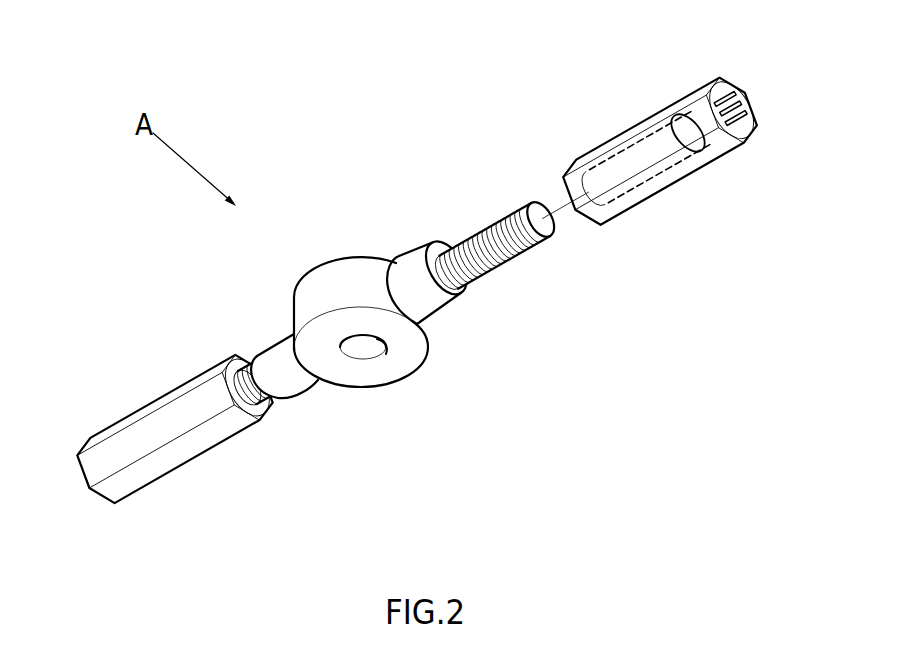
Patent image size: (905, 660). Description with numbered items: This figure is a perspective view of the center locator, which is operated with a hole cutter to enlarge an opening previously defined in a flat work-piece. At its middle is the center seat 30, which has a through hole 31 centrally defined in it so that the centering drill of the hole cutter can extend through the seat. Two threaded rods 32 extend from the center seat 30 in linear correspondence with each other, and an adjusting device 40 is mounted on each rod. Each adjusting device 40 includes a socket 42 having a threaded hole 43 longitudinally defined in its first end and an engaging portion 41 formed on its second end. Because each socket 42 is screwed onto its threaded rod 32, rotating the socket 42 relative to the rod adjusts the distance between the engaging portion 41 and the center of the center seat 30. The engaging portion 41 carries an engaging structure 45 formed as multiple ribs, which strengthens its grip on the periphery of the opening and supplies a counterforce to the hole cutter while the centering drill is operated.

The center seat 30 is at (383, 348).
The through hole 31 is at (381, 352).
The threaded rod 32 is at (480, 218).
The adjusting device 40 is at (424, 271).
The engaging portion 41 is at (745, 108).
The socket 42 is at (160, 407).
The threaded hole 43 is at (623, 198).
The engaging structure 45 is at (735, 99).